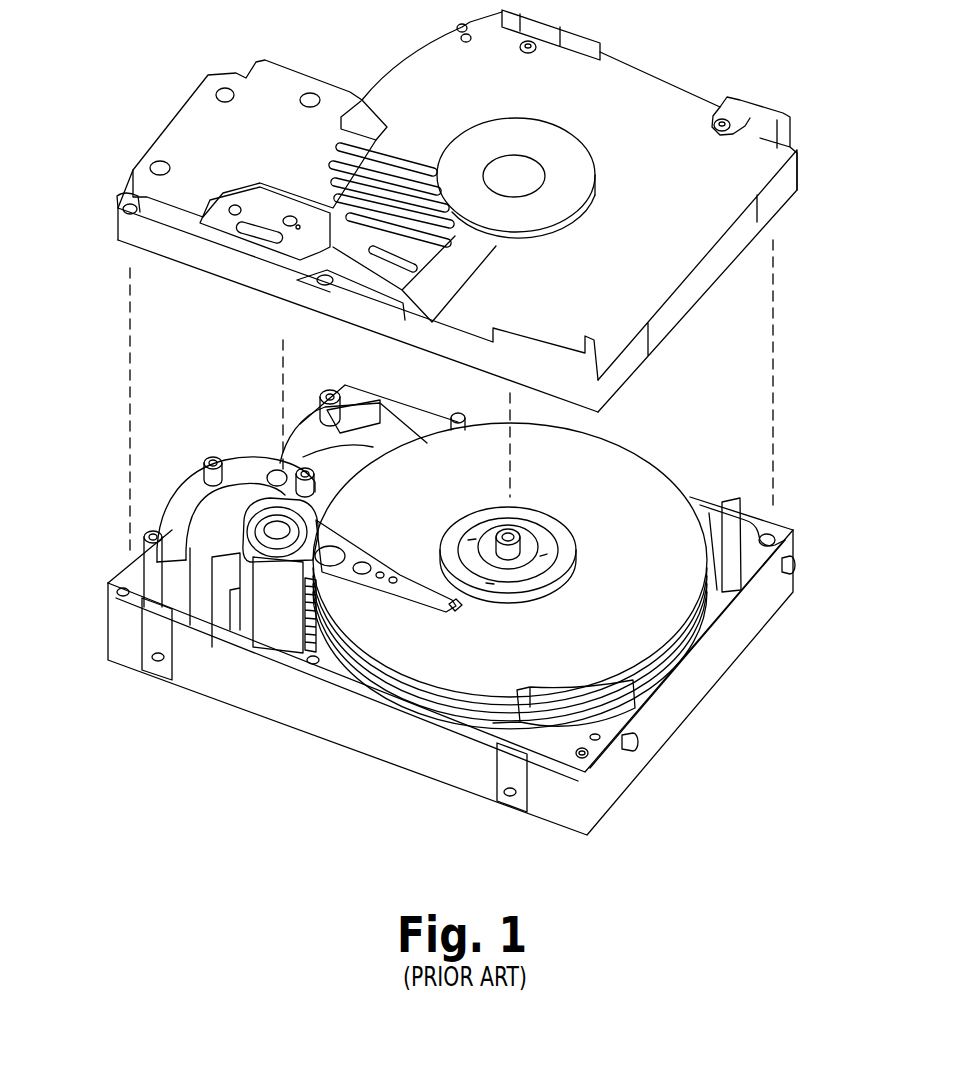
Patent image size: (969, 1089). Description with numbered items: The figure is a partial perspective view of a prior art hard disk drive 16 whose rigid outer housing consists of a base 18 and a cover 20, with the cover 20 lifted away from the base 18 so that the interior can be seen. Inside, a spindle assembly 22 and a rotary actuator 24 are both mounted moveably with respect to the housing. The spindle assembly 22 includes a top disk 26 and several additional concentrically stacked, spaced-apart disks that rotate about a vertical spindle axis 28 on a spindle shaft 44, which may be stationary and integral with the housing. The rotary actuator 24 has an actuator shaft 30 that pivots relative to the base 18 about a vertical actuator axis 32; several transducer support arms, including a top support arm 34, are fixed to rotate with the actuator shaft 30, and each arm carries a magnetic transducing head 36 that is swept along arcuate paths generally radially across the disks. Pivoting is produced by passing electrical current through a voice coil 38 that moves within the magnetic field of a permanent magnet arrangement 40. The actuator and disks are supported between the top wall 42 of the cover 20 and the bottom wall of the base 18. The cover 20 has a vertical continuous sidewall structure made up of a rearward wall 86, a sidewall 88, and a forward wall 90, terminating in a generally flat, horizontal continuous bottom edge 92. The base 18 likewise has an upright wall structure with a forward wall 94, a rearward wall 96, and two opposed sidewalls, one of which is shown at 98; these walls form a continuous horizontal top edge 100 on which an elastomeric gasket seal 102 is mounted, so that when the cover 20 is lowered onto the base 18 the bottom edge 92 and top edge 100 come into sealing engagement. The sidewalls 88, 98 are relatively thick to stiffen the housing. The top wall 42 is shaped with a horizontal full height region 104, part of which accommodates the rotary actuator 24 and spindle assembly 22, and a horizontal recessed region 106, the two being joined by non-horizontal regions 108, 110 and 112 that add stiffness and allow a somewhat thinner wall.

The hard disk drive 16 is at (172, 102).
The base 18 is at (725, 642).
The cover 20 is at (637, 85).
The spindle assembly 22 is at (668, 463).
The rotary actuator 24 is at (277, 627).
The top disk 26 is at (610, 467).
The spindle axis 28 is at (508, 476).
The actuator shaft 30 is at (292, 534).
The actuator axis 32 is at (283, 380).
The top support arm 34 is at (385, 596).
The transducing head 36 is at (458, 612).
The voice coil 38 is at (165, 514).
The permanent magnet arrangement 40 is at (252, 477).
The top wall 42 is at (413, 88).
The spindle shaft 44 is at (520, 543).
The rearward wall 86 is at (695, 283).
The sidewall 88 is at (195, 255).
The forward wall 90 is at (150, 143).
The bottom edge 92 is at (392, 340).
The forward wall 94 is at (120, 575).
The rearward wall 96 is at (662, 733).
The sidewall 98 is at (345, 725).
The top edge 100 is at (776, 518).
The elastomeric gasket seal 102 is at (690, 650).
The full height region 104 is at (263, 83).
The recessed region 106 is at (750, 175).
The non-horizontal region 108 is at (560, 225).
The non-horizontal region 110 is at (460, 268).
The non-horizontal region 112 is at (356, 127).